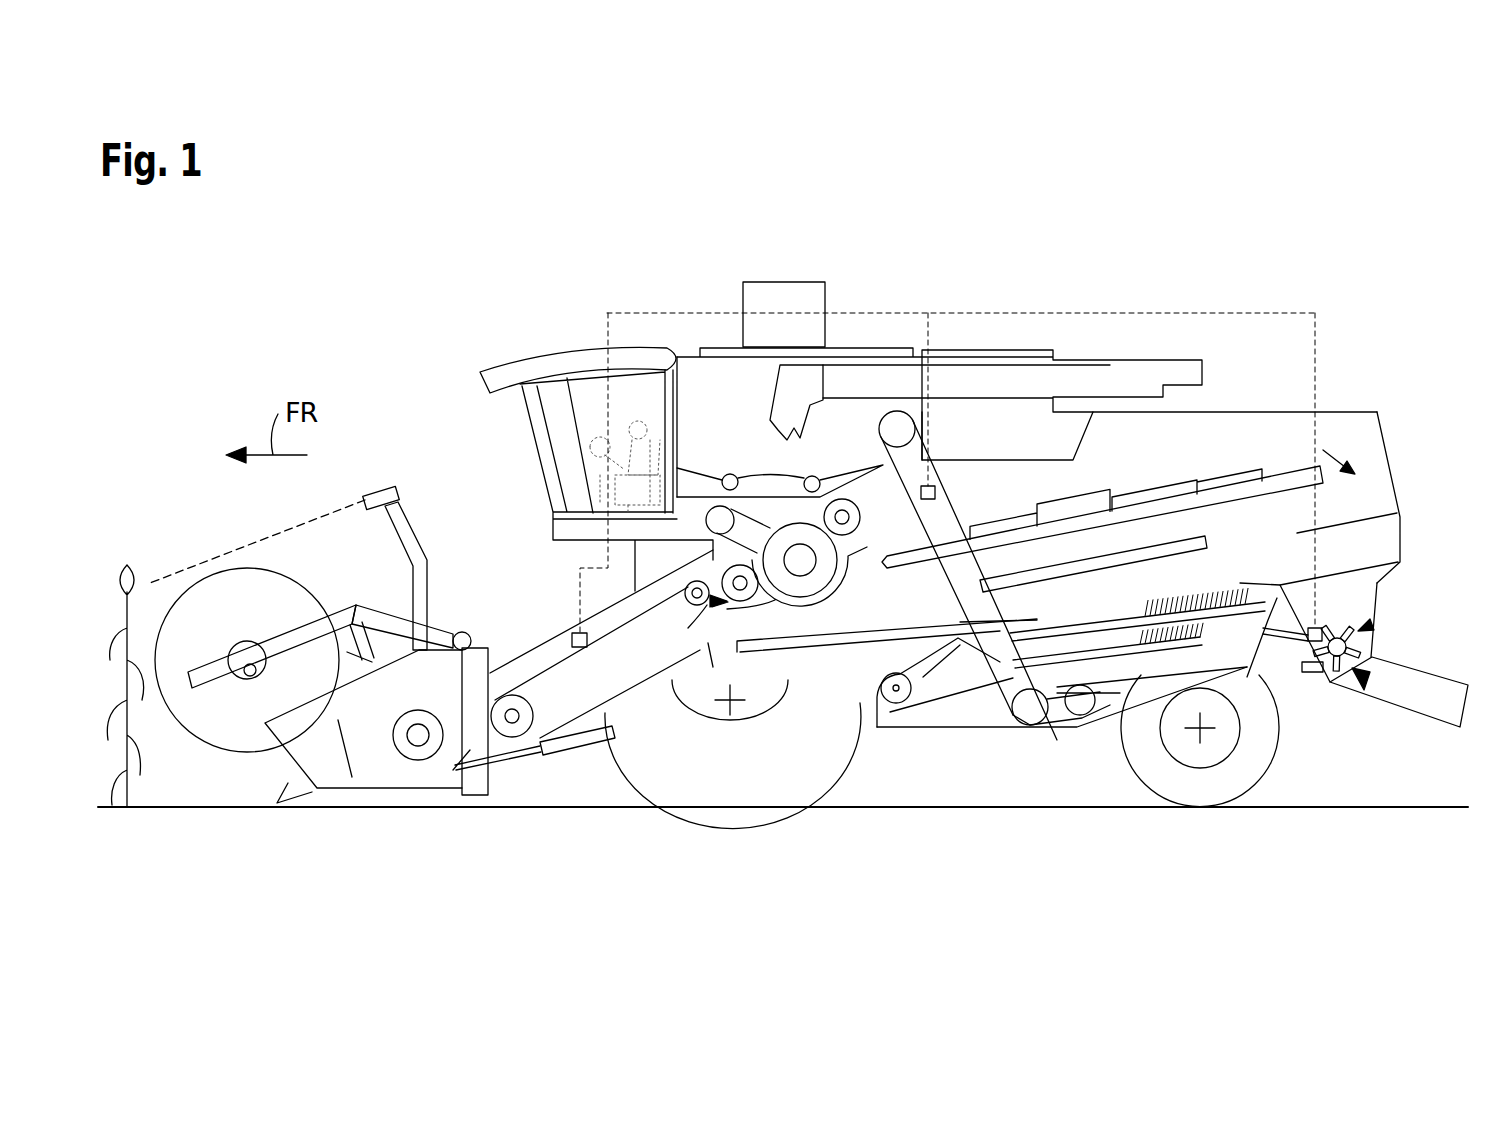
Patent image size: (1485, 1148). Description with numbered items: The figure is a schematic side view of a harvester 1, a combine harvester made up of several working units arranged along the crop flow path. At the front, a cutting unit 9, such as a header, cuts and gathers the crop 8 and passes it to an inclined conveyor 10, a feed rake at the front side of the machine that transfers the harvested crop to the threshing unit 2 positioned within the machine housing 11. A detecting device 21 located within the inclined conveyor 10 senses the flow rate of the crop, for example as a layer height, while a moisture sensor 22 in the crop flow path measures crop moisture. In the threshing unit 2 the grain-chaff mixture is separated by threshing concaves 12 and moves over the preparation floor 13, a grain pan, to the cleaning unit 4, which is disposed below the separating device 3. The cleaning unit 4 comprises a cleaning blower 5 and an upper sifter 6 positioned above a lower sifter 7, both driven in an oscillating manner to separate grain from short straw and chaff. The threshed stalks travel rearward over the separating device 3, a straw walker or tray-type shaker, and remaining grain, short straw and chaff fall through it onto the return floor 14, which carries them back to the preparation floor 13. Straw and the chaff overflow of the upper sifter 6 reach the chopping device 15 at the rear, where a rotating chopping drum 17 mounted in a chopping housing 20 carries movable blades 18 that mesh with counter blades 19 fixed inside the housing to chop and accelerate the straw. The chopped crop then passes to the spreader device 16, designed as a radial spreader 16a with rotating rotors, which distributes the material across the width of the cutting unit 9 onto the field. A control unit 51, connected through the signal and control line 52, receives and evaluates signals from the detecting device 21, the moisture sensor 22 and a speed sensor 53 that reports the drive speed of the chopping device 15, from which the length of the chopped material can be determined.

The harvester 1 is at (458, 413).
The threshing unit 2 is at (765, 508).
The separating device 3 is at (1228, 497).
The cleaning unit 4 is at (1090, 760).
The cleaning blower 5 is at (880, 720).
The upper sifter 6 is at (1017, 575).
The lower sifter 7 is at (1060, 717).
The crop 8 is at (136, 792).
The cutting unit 9 is at (375, 782).
The inclined conveyor 10 is at (566, 673).
The machine housing 11 is at (901, 529).
The threshing concave 12 is at (760, 597).
The preparation floor 13 is at (827, 643).
The return floor 14 is at (1207, 542).
The chopping device 15 is at (1372, 622).
The spreader device 16 is at (1379, 720).
The radial spreader 16a is at (1388, 712).
The chopping drum 17 is at (1338, 635).
The movable blades 18 is at (1377, 636).
The counter blades 19 is at (1320, 674).
The chopping housing 20 is at (1375, 582).
The detecting device 21 is at (572, 632).
The moisture sensor 22 is at (932, 486).
The control unit 51 is at (802, 330).
The signal and control line 52 is at (642, 313).
The speed sensor 53 is at (1317, 627).